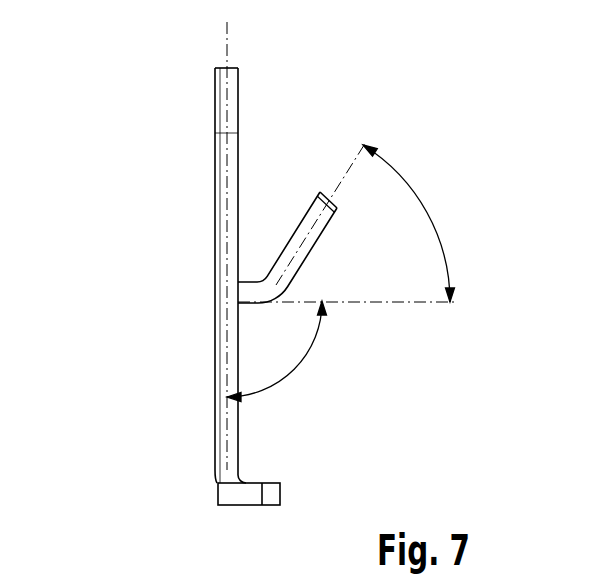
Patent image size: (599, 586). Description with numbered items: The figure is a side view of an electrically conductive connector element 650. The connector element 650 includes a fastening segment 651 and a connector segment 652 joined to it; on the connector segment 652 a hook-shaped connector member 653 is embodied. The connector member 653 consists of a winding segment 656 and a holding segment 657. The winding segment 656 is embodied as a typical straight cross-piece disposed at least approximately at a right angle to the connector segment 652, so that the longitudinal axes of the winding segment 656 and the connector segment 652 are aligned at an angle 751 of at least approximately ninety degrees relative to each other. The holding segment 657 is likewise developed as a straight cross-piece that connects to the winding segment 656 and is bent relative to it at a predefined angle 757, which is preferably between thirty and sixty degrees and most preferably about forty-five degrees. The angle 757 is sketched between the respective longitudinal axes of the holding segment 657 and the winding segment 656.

The connector element 650 is at (264, 285).
The fastening segment 651 is at (272, 490).
The connector segment 652 is at (221, 238).
The connector member 653 is at (323, 222).
The winding segment 656 is at (255, 295).
The holding segment 657 is at (331, 205).
The angle 751 is at (294, 369).
The angle 757 is at (425, 212).